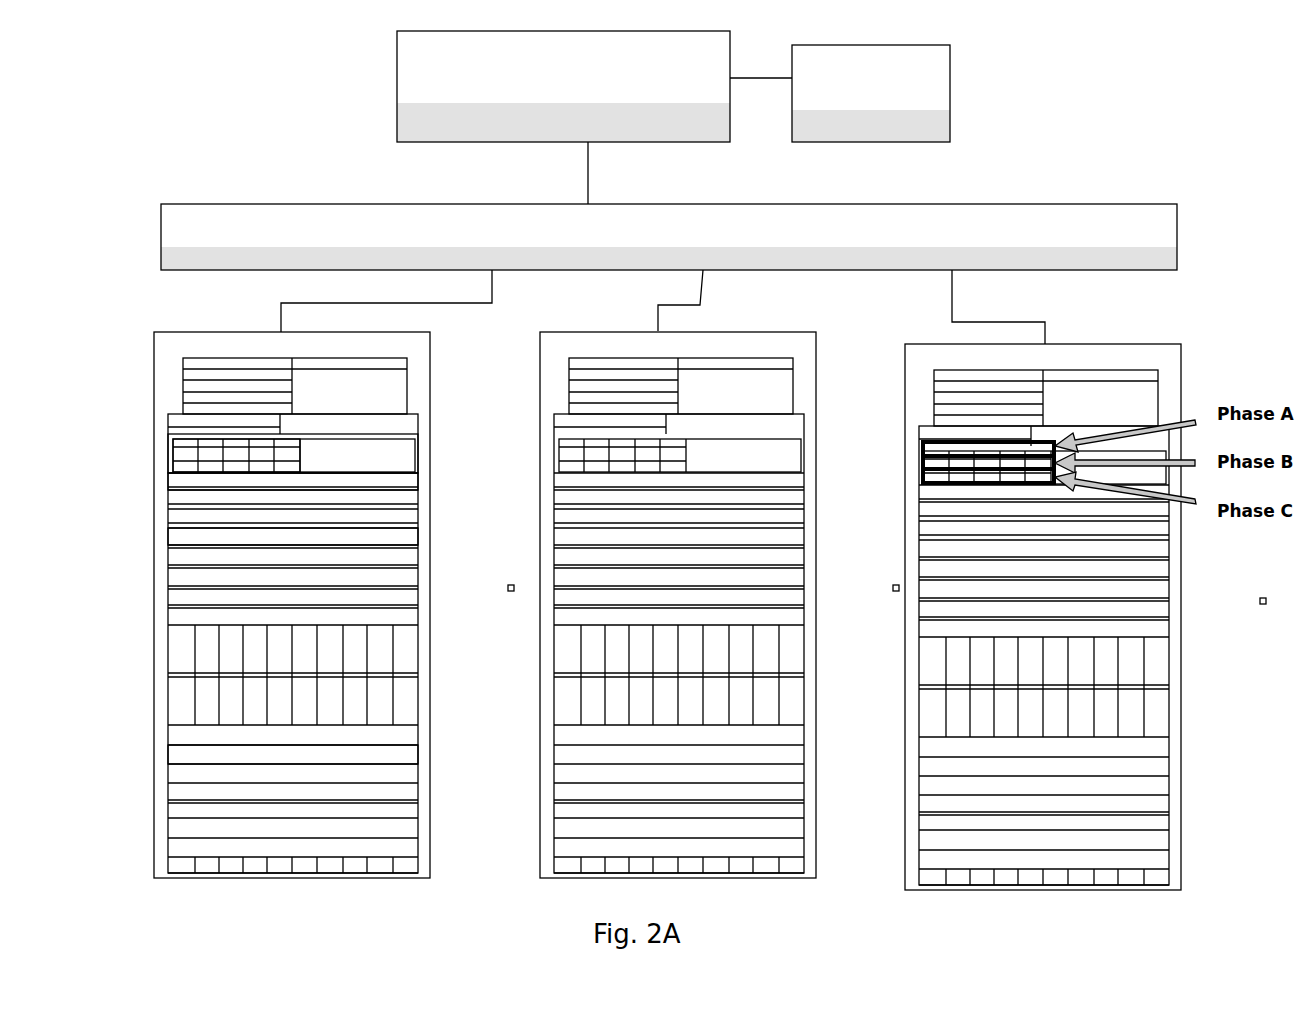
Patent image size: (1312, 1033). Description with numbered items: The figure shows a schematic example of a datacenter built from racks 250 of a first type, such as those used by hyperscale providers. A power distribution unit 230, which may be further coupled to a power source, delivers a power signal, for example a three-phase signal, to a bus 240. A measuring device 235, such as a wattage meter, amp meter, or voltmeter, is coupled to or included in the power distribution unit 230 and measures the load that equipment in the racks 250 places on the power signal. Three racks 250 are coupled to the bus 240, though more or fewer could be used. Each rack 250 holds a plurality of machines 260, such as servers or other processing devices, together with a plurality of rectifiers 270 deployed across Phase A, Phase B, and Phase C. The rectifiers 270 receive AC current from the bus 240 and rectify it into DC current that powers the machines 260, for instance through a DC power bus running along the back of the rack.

The power distribution unit 230 is at (563, 86).
The measuring device 235 is at (871, 93).
The bus 240 is at (669, 237).
The rack 250 is at (152, 346).
The machine 260 is at (168, 495).
The rectifier 270 is at (170, 467).